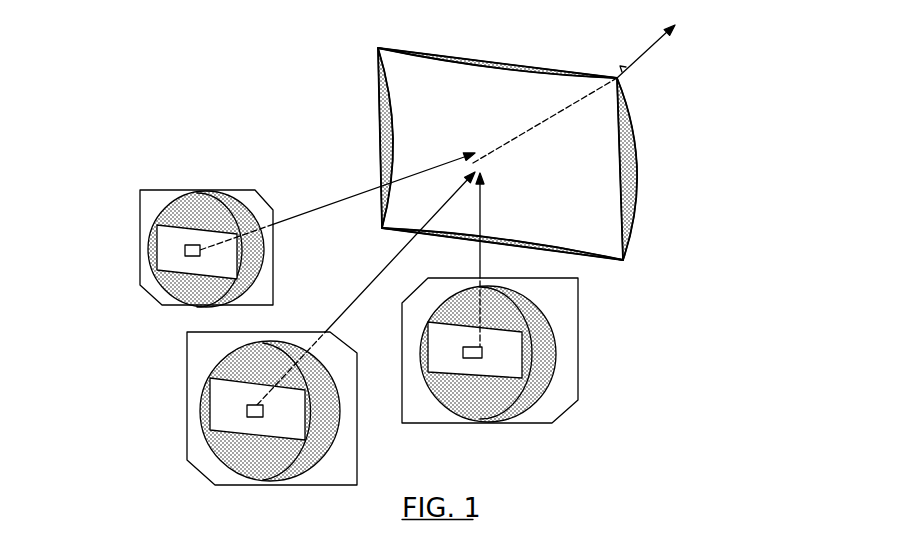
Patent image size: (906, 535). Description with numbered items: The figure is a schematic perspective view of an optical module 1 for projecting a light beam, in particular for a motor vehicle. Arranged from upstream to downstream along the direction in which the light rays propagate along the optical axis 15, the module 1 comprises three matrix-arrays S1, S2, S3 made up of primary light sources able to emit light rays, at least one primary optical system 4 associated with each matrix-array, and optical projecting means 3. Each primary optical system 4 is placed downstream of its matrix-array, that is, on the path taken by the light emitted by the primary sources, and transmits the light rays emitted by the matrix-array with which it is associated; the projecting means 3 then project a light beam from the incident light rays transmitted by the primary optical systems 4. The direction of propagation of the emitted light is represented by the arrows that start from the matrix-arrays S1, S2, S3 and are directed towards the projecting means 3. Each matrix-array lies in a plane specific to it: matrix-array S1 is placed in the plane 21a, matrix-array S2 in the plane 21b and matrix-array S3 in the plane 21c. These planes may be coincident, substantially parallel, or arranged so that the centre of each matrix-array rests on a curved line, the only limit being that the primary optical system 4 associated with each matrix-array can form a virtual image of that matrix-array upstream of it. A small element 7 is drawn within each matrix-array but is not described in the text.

The optical module 1 is at (178, 112).
The optical projecting means 3 is at (571, 143).
The optical axis 15 is at (658, 43).
The primary optical system 4 is at (170, 208).
The image sensor 7 is at (202, 255).
The matrix-array S1 is at (162, 240).
The matrix-array S2 is at (217, 395).
The matrix-array S3 is at (437, 338).
The plane 21a is at (140, 270).
The plane 21b is at (360, 435).
The plane 21c is at (577, 352).